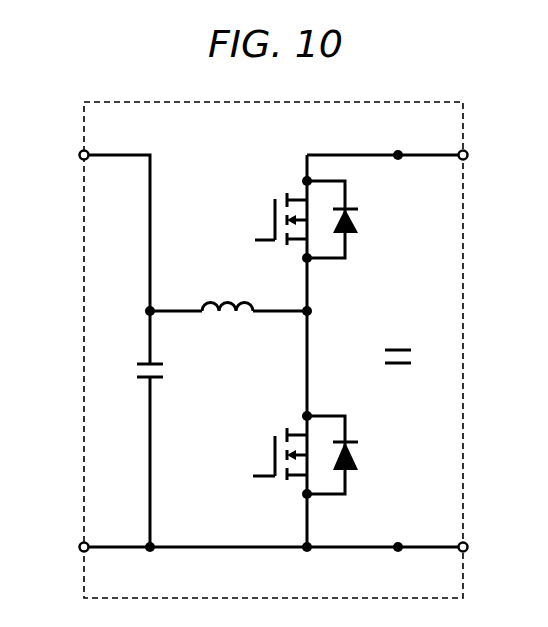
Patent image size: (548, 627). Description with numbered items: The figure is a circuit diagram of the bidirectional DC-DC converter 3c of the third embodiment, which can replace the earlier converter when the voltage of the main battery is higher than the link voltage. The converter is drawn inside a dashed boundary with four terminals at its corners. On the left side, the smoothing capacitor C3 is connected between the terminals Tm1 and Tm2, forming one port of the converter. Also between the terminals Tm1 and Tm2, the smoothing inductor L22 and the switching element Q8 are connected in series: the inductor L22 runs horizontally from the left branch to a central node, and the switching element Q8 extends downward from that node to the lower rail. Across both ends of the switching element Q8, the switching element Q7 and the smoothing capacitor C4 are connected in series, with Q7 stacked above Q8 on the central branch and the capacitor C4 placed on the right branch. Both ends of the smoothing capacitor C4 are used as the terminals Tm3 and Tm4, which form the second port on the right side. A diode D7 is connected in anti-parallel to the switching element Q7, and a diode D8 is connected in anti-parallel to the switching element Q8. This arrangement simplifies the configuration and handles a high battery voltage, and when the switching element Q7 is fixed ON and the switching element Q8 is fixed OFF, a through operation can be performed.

The bidirectional DC-DC converter 3c is at (203, 104).
The terminal Tm1 is at (80, 151).
The terminal Tm2 is at (80, 543).
The terminal Tm3 is at (467, 152).
The terminal Tm4 is at (467, 543).
The smoothing inductor L22 is at (222, 296).
The smoothing capacitor C3 is at (146, 373).
The smoothing capacitor C4 is at (410, 348).
The switching element Q7 is at (274, 215).
The switching element Q8 is at (274, 452).
The diode D7 is at (340, 236).
The diode D8 is at (340, 472).